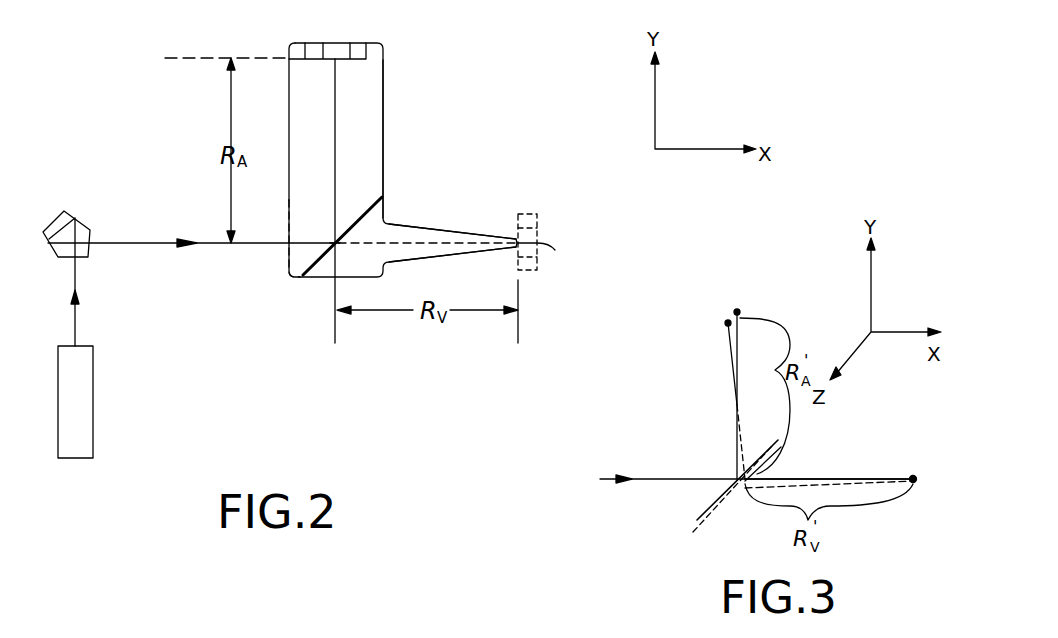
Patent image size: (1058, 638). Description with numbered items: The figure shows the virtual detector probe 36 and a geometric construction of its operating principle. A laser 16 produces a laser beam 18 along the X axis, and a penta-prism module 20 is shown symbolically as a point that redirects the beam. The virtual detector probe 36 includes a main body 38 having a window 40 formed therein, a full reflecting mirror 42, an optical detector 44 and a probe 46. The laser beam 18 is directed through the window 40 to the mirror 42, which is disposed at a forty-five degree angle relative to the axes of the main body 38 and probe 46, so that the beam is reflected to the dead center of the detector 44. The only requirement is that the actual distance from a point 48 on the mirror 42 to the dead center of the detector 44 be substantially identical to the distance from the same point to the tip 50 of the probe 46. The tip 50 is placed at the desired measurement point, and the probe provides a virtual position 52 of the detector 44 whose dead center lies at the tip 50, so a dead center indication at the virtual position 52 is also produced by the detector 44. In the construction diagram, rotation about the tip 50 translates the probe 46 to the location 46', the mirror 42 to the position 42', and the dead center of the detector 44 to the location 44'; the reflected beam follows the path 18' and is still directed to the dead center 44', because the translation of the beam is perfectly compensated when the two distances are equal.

In FIG. 2, the laser 16 is at (94, 413).
In FIG. 2, the laser beam 18 is at (281, 276).
In FIG. 3, the laser beam 18 is at (756, 397).
In FIG. 3, the reflected laser beam path 18' is at (706, 401).
In FIG. 2, the penta-prism module 20 is at (96, 211).
In FIG. 2, the virtual detector probe 36 is at (412, 90).
In FIG. 2, the main body 38 is at (384, 141).
In FIG. 2, the window 40 is at (289, 222).
In FIG. 2, the full reflecting mirror 42 is at (364, 225).
In FIG. 3, the full reflecting mirror 42 is at (714, 480).
In FIG. 3, the translated mirror position 42' is at (732, 498).
In FIG. 2, the optical detector 44 is at (320, 33).
In FIG. 3, the optical detector 44 is at (711, 312).
In FIG. 3, the translated detector dead center 44' is at (697, 336).
In FIG. 2, the probe 46 is at (452, 227).
In FIG. 3, the probe 46 is at (829, 465).
In FIG. 3, the translated probe position 46' is at (829, 498).
In FIG. 2, the point on mirror 48 is at (338, 248).
In FIG. 2, the probe tip 50 is at (552, 258).
In FIG. 3, the probe tip 50 is at (913, 477).
In FIG. 2, the virtual position of detector 52 is at (540, 229).